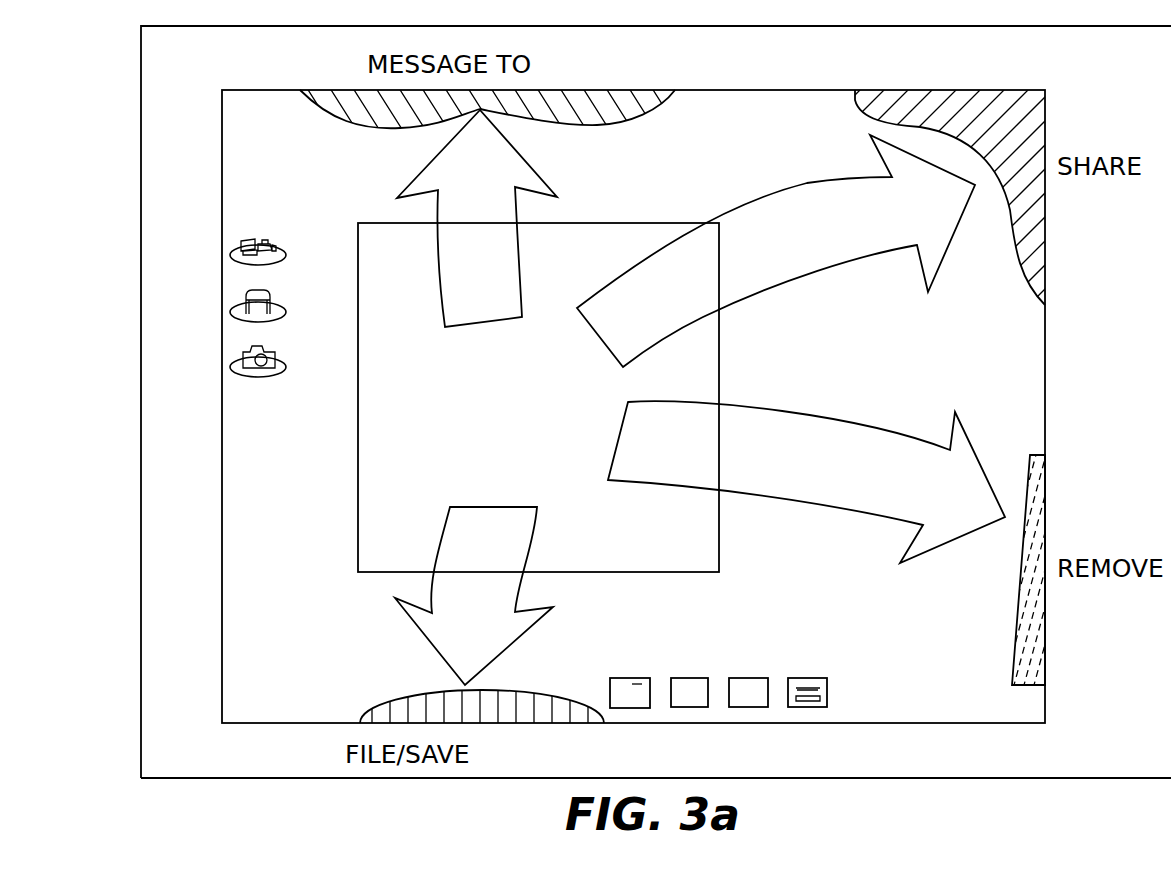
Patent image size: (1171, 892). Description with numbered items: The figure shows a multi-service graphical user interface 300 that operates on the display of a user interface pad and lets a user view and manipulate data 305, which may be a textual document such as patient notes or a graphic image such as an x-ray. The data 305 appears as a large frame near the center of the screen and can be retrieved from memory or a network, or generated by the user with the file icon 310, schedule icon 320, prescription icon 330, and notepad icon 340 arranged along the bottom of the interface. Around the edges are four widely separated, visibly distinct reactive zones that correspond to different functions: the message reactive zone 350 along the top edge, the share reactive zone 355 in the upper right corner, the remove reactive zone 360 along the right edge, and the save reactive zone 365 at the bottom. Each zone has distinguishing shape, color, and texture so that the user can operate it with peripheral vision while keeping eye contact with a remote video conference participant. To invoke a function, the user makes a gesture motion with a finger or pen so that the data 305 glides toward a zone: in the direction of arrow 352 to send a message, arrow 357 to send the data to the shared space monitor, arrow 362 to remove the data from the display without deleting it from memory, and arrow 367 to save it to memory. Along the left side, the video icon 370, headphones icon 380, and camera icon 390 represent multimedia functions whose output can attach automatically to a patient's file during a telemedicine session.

The multi-service graphical user interface 300 is at (771, 136).
The data 305 is at (719, 350).
The file icon 310 is at (632, 678).
The schedule icon 320 is at (688, 678).
The prescription icon 330 is at (755, 678).
The notepad icon 340 is at (810, 678).
The message reactive zone 350 is at (588, 126).
The arrow 352 is at (498, 236).
The share reactive zone 355 is at (1021, 266).
The arrow 357 is at (751, 279).
The remove reactive zone 360 is at (1018, 600).
The arrow 362 is at (761, 459).
The save reactive zone 365 is at (530, 690).
The arrow 367 is at (500, 587).
The video icon 370 is at (262, 240).
The headphones icon 380 is at (272, 292).
The camera icon 390 is at (275, 352).